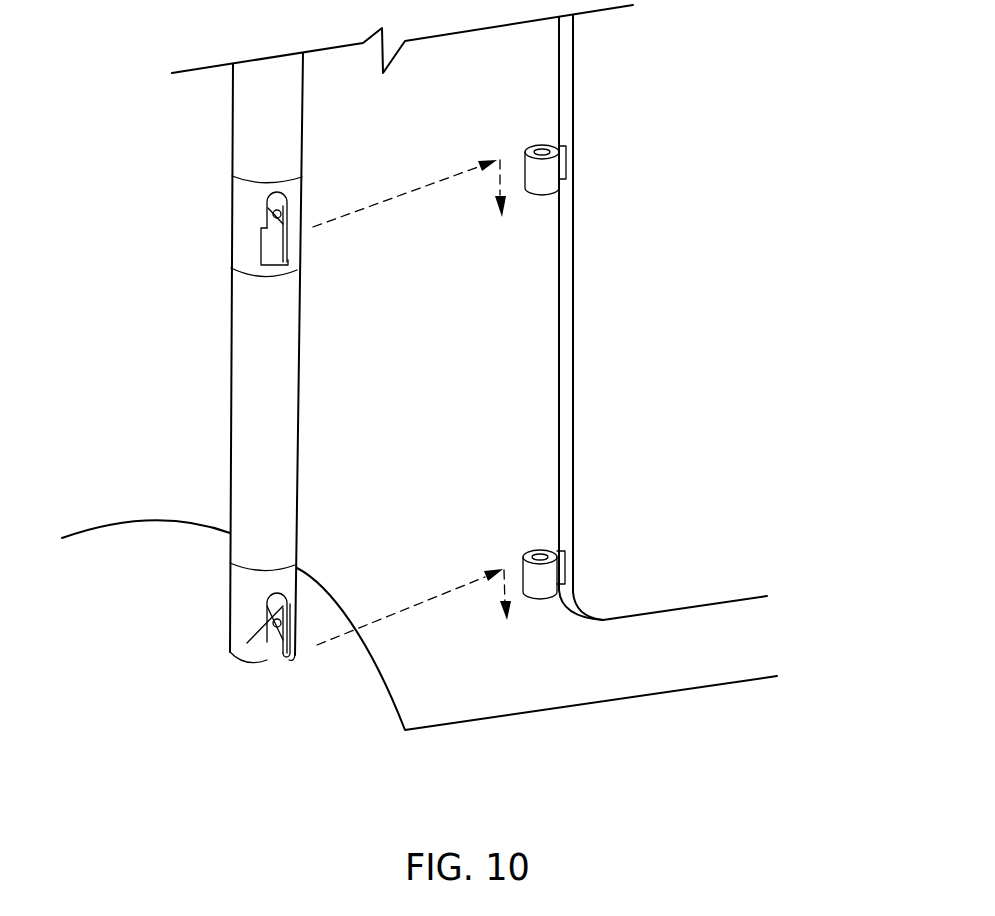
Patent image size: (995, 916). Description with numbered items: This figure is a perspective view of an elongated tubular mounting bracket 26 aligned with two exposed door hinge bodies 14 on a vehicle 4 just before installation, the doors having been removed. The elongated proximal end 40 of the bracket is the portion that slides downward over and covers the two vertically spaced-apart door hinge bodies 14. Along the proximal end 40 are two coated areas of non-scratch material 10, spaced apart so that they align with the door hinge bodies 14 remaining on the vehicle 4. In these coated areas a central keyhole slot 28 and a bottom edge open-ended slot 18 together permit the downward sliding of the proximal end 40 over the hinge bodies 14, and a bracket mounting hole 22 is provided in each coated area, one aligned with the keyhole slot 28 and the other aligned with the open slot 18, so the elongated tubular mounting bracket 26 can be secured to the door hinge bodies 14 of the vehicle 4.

The elongated tubular mounting bracket 26 is at (186, 106).
The non-scratch material 10 is at (299, 188).
The elongated proximal end 40 is at (230, 450).
The bracket mounting hole 22 is at (266, 212).
The central keyhole slot 28 is at (278, 237).
The bottom edge open-ended slot 18 is at (283, 606).
The door hinge body 14 is at (530, 147).
The vehicle 4 is at (407, 685).